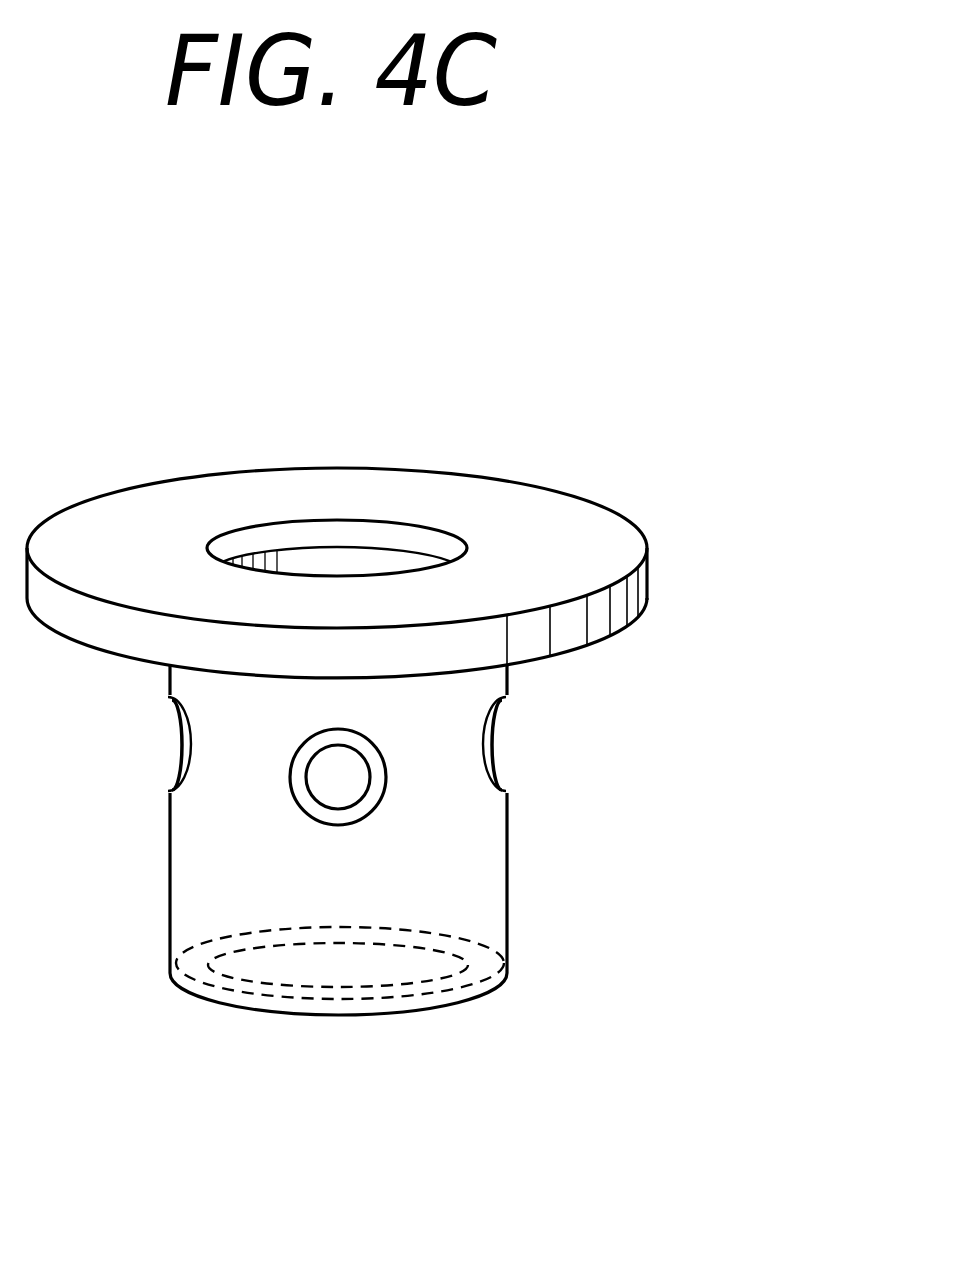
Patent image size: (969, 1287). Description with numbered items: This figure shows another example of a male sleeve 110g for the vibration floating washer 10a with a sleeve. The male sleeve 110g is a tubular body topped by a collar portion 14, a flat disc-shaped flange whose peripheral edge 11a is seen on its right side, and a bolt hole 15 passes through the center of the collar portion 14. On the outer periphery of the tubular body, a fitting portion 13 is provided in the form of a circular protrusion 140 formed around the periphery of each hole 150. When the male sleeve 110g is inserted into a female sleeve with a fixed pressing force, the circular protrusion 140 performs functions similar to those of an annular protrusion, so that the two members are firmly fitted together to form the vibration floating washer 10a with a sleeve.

The vibration floating washer with a sleeve 10a is at (513, 410).
The collar portion 14 is at (175, 515).
The flange 11a is at (678, 546).
The bolt hole 15 is at (347, 563).
The fitting portion 13 is at (542, 688).
The circular protrusion 140 is at (507, 713).
The hole 150 is at (507, 782).
The male sleeve 110g is at (212, 1003).